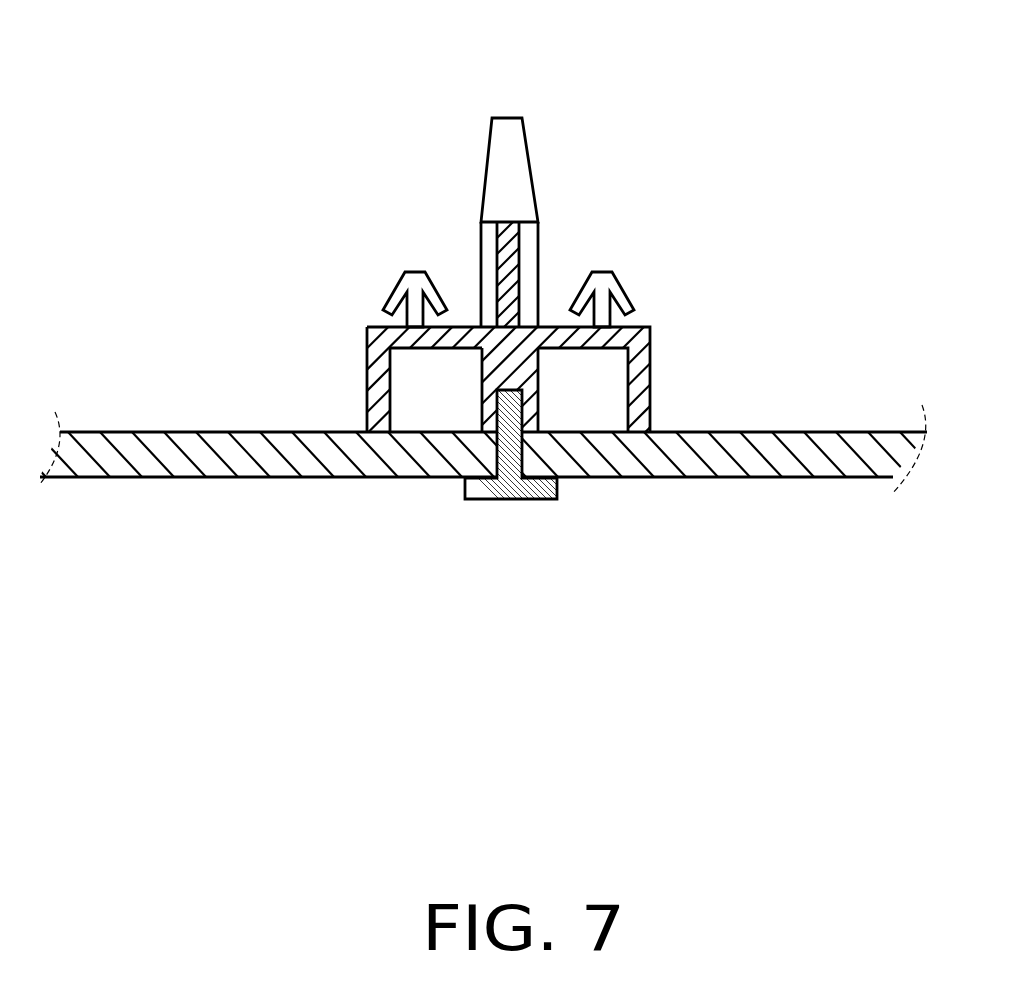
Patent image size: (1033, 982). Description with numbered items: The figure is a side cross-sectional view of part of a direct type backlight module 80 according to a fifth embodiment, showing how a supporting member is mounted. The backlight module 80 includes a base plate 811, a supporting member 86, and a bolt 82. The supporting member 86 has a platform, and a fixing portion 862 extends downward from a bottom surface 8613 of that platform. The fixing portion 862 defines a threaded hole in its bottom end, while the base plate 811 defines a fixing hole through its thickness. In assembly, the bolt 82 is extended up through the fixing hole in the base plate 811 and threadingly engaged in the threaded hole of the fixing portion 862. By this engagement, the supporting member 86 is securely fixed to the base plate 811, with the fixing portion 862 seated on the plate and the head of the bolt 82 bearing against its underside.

The direct type backlight module 80 is at (508, 293).
The supporting member 86 is at (508, 275).
The fixing portion 862 is at (540, 375).
The bottom surface 8613 is at (432, 349).
The base plate 811 is at (820, 430).
The bolt 82 is at (513, 492).